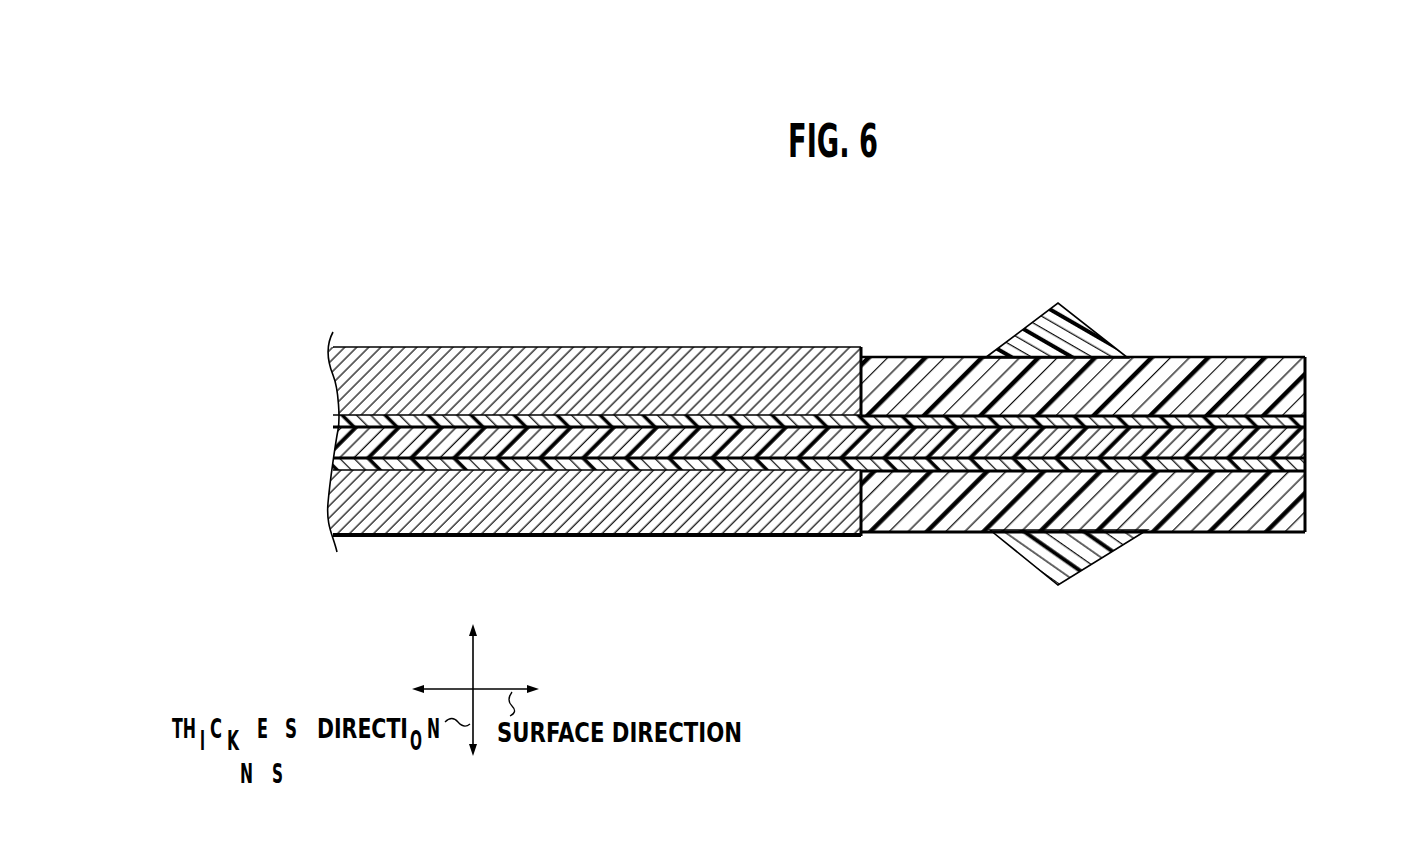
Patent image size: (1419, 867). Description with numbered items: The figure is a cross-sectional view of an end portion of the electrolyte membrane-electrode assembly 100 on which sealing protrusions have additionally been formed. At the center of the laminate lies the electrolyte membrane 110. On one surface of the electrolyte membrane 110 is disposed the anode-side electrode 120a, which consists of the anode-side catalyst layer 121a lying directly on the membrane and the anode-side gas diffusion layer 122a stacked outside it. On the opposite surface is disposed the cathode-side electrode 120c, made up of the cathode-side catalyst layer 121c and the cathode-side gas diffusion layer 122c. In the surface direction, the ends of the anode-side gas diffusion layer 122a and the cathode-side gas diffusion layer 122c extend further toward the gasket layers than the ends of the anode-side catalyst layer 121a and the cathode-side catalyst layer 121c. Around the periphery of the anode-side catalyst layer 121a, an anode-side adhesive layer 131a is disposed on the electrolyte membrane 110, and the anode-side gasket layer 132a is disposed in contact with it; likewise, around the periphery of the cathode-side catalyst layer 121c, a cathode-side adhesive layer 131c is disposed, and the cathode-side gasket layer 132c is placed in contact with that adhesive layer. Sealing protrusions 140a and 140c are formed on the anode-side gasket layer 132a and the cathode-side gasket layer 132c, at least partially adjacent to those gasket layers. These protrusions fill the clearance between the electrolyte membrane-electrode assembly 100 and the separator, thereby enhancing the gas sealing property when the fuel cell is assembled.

The electrolyte membrane-electrode assembly 100 is at (163, 347).
The electrolyte membrane 110 is at (337, 432).
The anode-side electrode 120a is at (237, 355).
The anode-side catalyst layer 121a is at (340, 420).
The anode-side gas diffusion layer 122a is at (350, 378).
The cathode-side electrode 120c is at (237, 467).
The cathode-side catalyst layer 121c is at (333, 463).
The cathode-side gas diffusion layer 122c is at (337, 518).
The anode-side adhesive layer 131a is at (1305, 425).
The anode-side gasket layer 132a is at (1305, 366).
The cathode-side adhesive layer 131c is at (1305, 472).
The cathode-side gasket layer 132c is at (1305, 517).
The sealing protrusion 140a is at (1089, 332).
The sealing protrusion 140c is at (1025, 565).